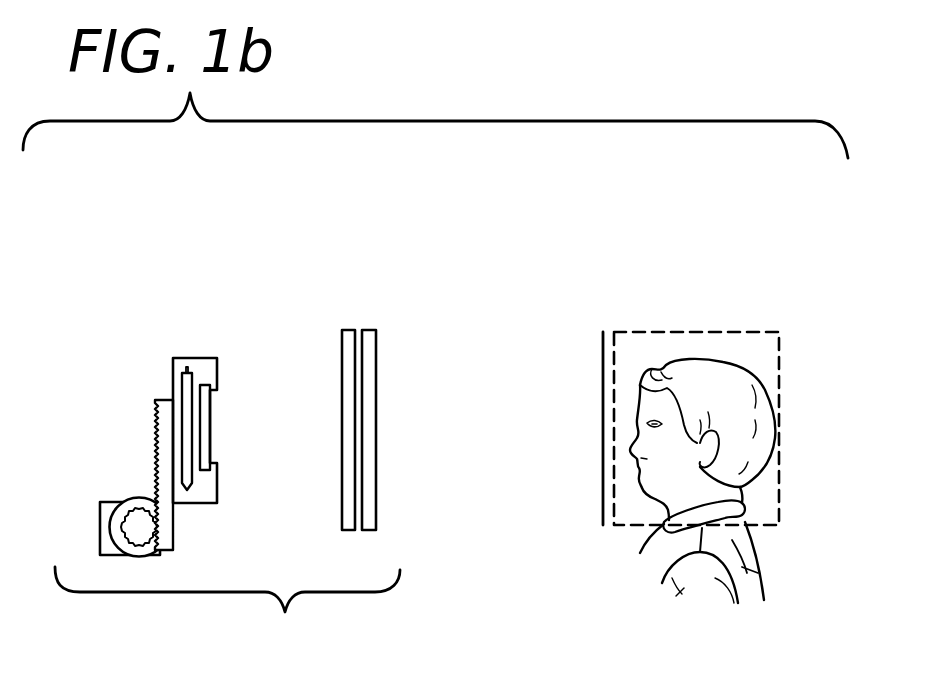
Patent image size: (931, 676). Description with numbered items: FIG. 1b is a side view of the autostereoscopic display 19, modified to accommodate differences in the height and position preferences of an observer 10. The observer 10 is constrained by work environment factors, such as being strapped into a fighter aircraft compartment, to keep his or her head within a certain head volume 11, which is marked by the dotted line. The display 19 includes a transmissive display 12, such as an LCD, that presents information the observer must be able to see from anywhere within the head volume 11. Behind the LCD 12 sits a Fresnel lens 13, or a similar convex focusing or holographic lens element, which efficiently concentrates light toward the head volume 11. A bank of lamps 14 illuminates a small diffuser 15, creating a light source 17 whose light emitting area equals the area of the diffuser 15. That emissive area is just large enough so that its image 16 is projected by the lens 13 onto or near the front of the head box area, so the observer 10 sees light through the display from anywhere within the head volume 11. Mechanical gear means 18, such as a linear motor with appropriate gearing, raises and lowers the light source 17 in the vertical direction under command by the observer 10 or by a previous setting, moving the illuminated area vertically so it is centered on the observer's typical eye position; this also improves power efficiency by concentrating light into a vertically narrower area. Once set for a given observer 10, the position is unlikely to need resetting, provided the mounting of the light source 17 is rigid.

The observer 10 is at (697, 373).
The head volume 11 is at (781, 350).
The transmissive display 12 is at (367, 328).
The Fresnel lens 13 is at (347, 328).
The bank of lamps 14 is at (185, 397).
The diffuser 15 is at (213, 412).
The image 16 is at (602, 345).
The light source 17 is at (187, 358).
The mechanical gear means 18 is at (113, 502).
The autostereoscopic display 19 is at (238, 458).